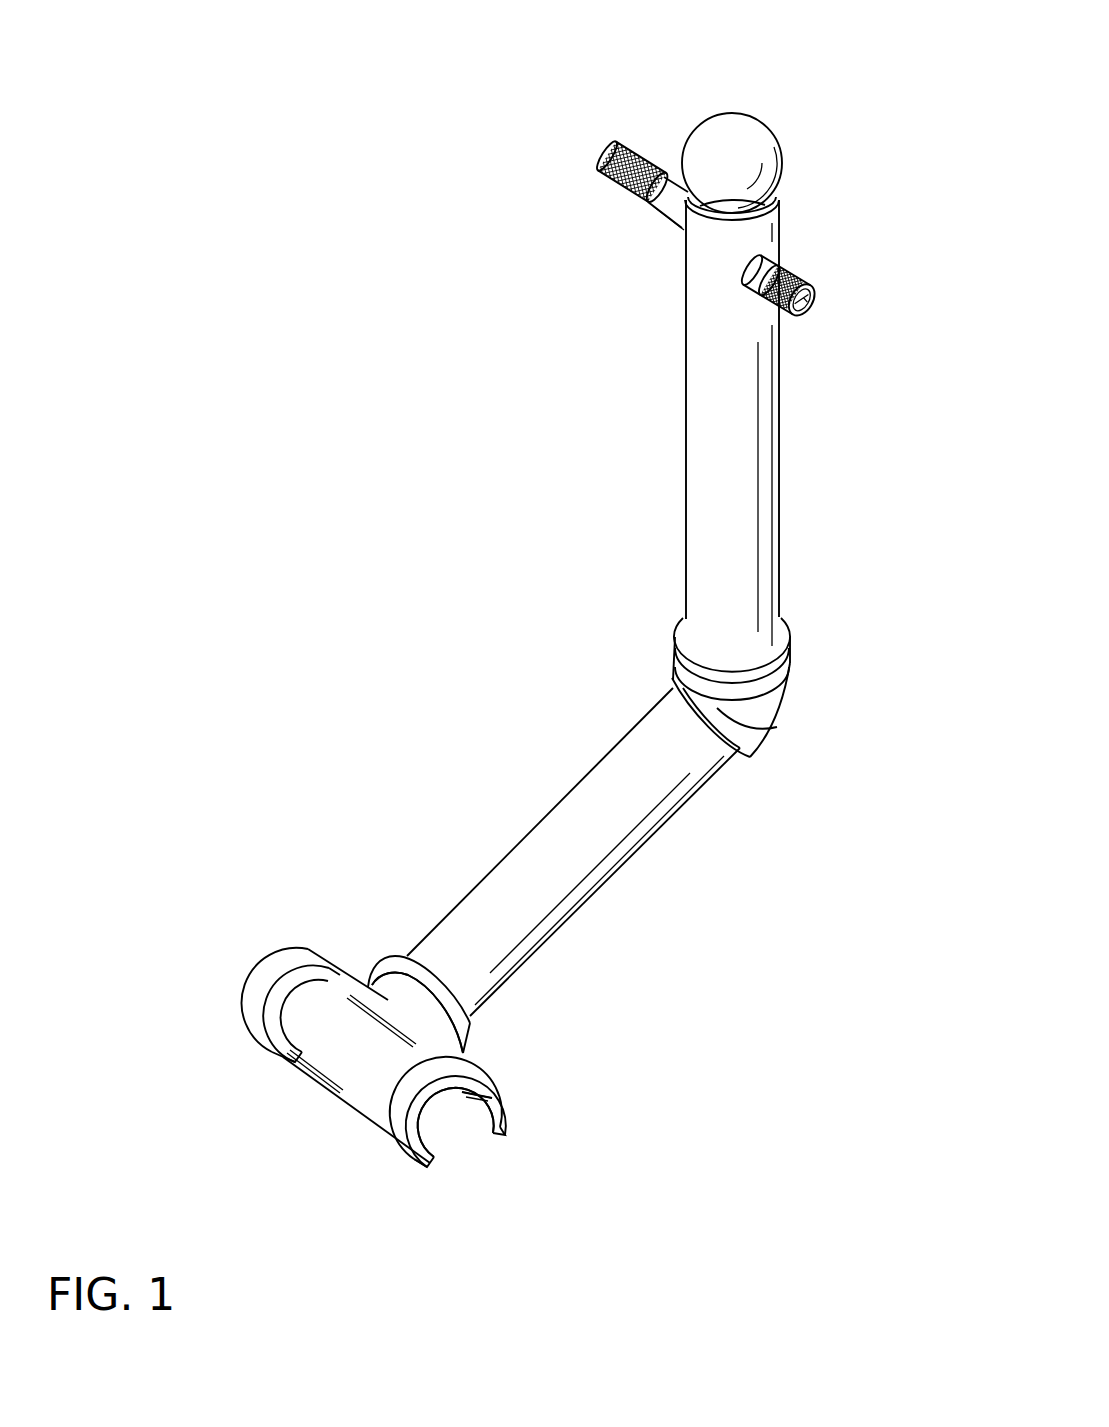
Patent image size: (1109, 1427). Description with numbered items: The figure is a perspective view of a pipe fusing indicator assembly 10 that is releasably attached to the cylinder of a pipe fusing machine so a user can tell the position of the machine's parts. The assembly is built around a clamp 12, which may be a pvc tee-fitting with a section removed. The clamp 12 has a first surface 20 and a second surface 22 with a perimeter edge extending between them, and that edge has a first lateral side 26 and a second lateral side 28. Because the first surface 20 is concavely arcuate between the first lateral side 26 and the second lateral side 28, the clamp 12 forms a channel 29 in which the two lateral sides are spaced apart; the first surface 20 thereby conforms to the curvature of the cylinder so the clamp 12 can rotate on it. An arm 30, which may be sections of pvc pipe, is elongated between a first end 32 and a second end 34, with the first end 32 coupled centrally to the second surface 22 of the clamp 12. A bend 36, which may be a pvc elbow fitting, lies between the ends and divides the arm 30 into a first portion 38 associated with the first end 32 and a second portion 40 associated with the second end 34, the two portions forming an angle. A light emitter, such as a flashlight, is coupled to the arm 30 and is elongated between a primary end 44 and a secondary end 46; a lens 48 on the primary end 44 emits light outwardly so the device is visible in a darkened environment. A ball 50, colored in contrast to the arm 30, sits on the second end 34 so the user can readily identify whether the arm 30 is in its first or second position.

The pipe fusing indicator assembly 10 is at (292, 204).
The clamp 12 is at (350, 905).
The first surface 20 is at (490, 1098).
The second surface 22 is at (330, 1014).
The first lateral side 26 is at (423, 1167).
The second lateral side 28 is at (503, 1132).
The channel 29 is at (453, 1157).
The arm 30 is at (713, 780).
The first end 32 is at (393, 1020).
The second end 34 is at (730, 213).
The bend 36 is at (788, 708).
The first portion 38 is at (648, 908).
The second portion 40 is at (812, 488).
The primary end 44 is at (817, 283).
The secondary end 46 is at (597, 150).
The lens 48 is at (810, 308).
The ball 50 is at (767, 128).